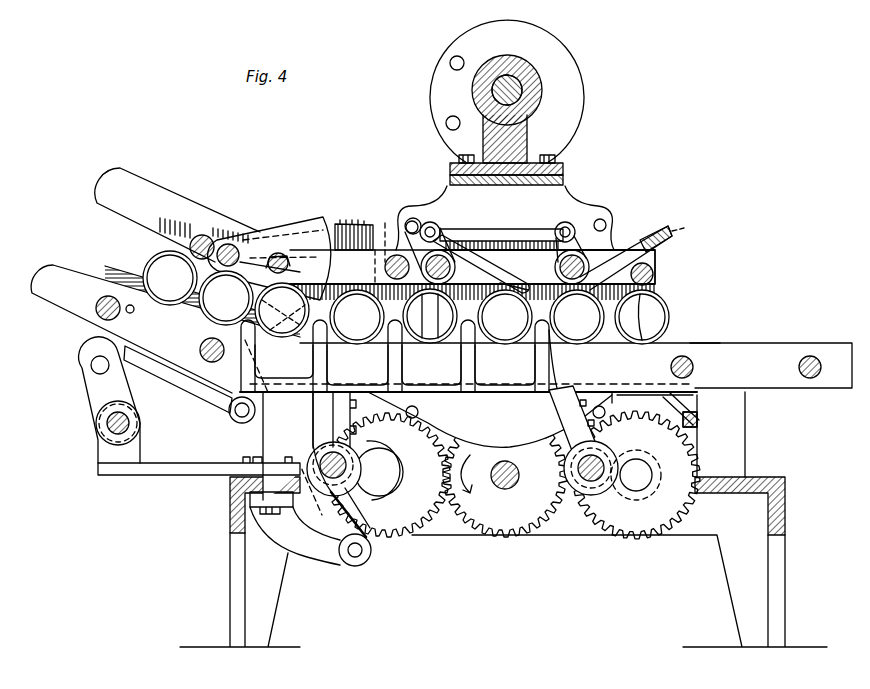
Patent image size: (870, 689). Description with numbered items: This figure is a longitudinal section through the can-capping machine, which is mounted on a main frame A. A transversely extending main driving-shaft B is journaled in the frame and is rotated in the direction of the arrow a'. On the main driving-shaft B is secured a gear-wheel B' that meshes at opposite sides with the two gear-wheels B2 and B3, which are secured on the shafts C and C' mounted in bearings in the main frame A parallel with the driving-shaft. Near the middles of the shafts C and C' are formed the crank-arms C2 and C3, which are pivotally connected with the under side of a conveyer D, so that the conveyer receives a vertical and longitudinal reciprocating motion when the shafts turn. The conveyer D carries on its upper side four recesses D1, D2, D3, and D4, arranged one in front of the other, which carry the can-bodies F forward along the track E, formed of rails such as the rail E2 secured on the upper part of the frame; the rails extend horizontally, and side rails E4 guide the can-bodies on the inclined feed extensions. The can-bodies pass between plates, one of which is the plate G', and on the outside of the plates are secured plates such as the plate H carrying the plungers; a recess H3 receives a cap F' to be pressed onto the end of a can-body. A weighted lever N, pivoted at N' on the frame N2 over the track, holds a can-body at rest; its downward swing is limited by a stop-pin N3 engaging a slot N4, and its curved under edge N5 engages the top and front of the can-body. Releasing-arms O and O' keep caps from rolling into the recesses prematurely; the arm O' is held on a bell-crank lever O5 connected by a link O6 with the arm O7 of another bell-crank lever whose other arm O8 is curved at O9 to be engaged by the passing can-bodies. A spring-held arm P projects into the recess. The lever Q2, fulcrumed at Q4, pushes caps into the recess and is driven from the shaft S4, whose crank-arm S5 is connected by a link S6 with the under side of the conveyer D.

The main frame A is at (768, 481).
The main driving-shaft B is at (516, 475).
The gear-wheel B' is at (505, 475).
The gear-wheel B2 is at (388, 475).
The gear-wheel B3 is at (78, 285).
The shaft C is at (361, 444).
The shaft C' is at (641, 476).
The crank-arm C2 is at (378, 463).
The crank-arm C3 is at (640, 462).
The conveyer D is at (472, 395).
The recess D1 is at (284, 361).
The recess D2 is at (357, 365).
The recess D3 is at (431, 365).
The recess D4 is at (505, 365).
The passageway or track E is at (703, 332).
The rail E2 is at (758, 352).
The side rail E4 is at (113, 280).
The can-body F is at (412, 297).
The cap F' is at (577, 317).
The plate G' is at (505, 214).
The plate H is at (507, 135).
The recess H3 is at (177, 215).
The weighted lever N is at (269, 249).
The pivot N' is at (233, 232).
The frame N2 is at (392, 242).
The stop-pin N3 is at (270, 250).
The slot N4 is at (291, 263).
The curved under edge N5 is at (472, 275).
The releasing-arm O is at (354, 225).
The releasing-arm O' is at (686, 224).
The bell-crank lever O5 is at (628, 240).
The link O6 is at (528, 240).
The arm of bell-crank lever O7 is at (446, 258).
The arm of bell-crank lever O8 is at (476, 283).
The curved under side O9 is at (521, 286).
The arm P is at (282, 310).
The lever Q2 is at (324, 514).
The fulcrum Q4 is at (362, 562).
The shaft S4 is at (105, 426).
The crank-arm S5 is at (95, 396).
The link S6 is at (197, 398).
The arrow a' is at (475, 474).